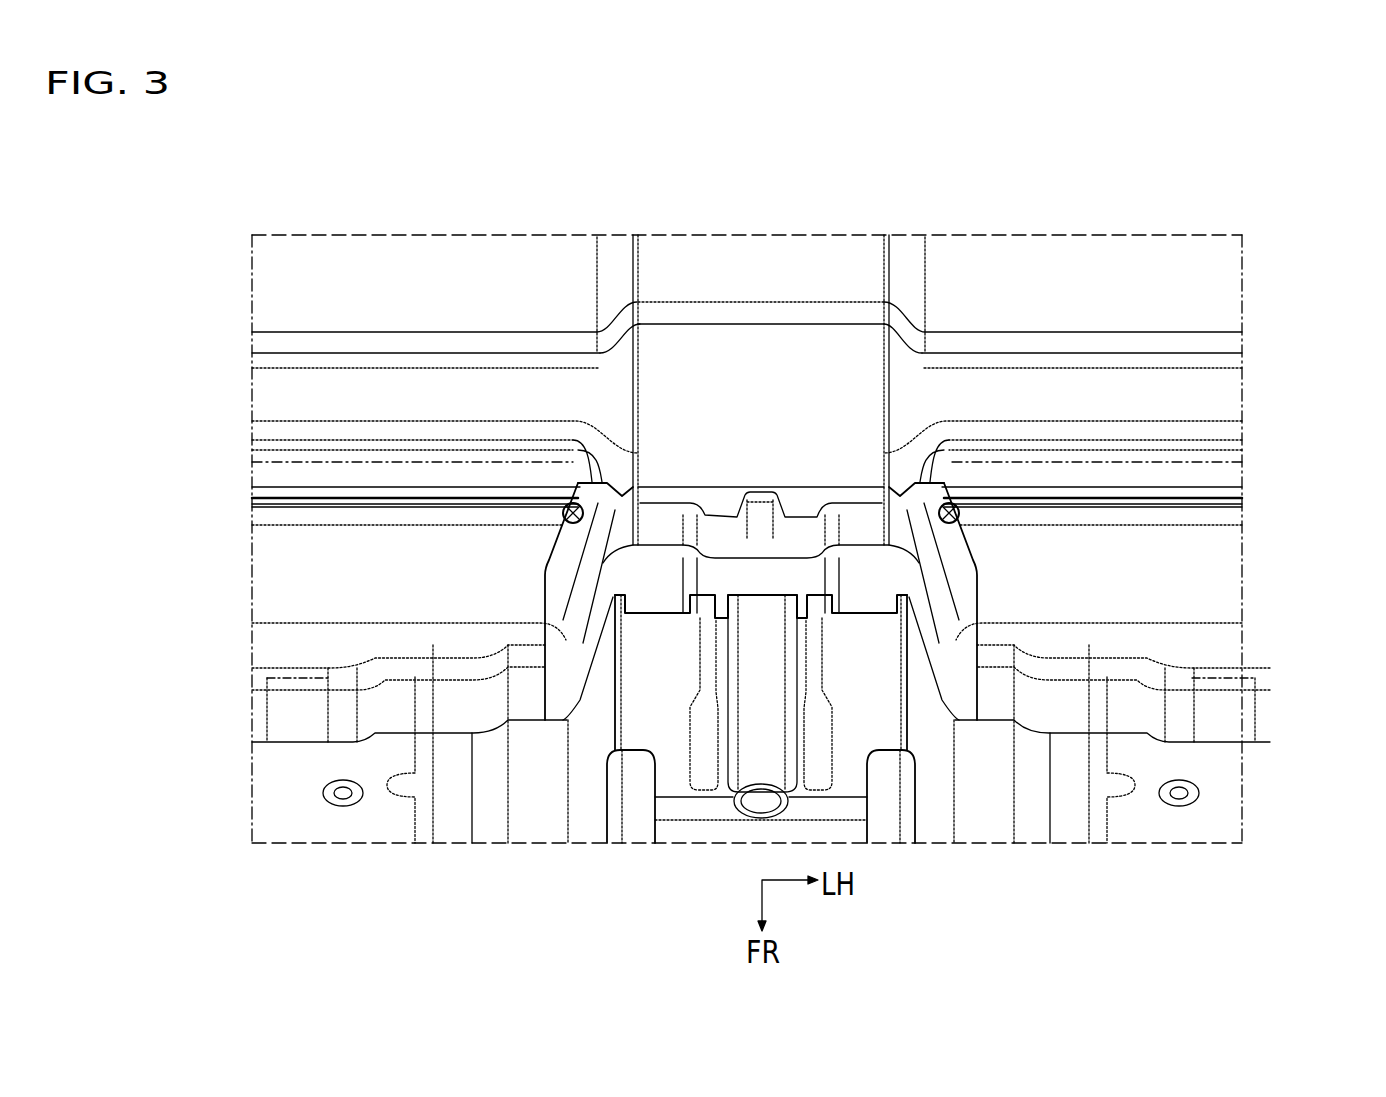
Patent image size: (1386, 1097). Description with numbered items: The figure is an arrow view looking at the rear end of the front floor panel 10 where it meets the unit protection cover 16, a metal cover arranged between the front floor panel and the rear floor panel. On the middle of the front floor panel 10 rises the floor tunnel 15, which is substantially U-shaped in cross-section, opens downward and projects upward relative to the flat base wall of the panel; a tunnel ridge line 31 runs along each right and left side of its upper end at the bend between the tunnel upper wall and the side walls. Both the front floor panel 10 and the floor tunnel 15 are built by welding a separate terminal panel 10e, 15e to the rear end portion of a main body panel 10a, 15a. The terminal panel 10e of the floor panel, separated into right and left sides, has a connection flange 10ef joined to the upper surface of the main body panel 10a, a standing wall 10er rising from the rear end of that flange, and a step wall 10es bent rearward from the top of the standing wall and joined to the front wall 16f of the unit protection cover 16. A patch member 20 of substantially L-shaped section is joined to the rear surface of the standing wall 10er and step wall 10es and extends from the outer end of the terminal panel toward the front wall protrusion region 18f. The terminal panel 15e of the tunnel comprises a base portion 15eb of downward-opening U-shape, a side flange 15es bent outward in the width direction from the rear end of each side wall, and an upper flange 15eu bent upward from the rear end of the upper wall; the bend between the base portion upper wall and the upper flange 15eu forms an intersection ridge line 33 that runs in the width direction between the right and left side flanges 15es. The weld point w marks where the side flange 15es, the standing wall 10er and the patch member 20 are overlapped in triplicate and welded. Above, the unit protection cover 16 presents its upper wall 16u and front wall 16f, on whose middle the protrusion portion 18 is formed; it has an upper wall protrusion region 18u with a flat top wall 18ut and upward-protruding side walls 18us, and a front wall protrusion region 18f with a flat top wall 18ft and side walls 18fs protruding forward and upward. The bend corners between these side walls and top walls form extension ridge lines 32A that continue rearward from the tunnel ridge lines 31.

The front floor panel 10 is at (1230, 843).
The main body panel 10a is at (298, 830).
The terminal panel 10e is at (260, 612).
The connection flange 10ef is at (265, 647).
The standing wall 10er is at (293, 563).
The step wall 10es is at (360, 477).
The floor tunnel 15 is at (605, 840).
The main body panel 15a is at (678, 807).
The terminal panel 15e is at (658, 583).
The base portion 15eb is at (778, 578).
The side flange 15es is at (570, 548).
The upper flange 15eu is at (713, 497).
The unit protection cover 16 is at (1237, 305).
The front wall 16f is at (1203, 397).
The upper wall 16u is at (1073, 252).
The protrusion portion 18 is at (743, 253).
The front wall protrusion region 18f is at (761, 327).
The side walls 18fs is at (617, 412).
The top wall 18ft is at (730, 380).
The upper wall protrusion region 18u is at (761, 313).
The side walls 18us is at (610, 262).
The top wall 18ut is at (780, 255).
The patch member 20 is at (293, 455).
The tunnel ridge line 31 is at (612, 733).
The extension ridge line 32A is at (636, 255).
The intersection ridge line 33 is at (802, 513).
The weld point w is at (562, 513).